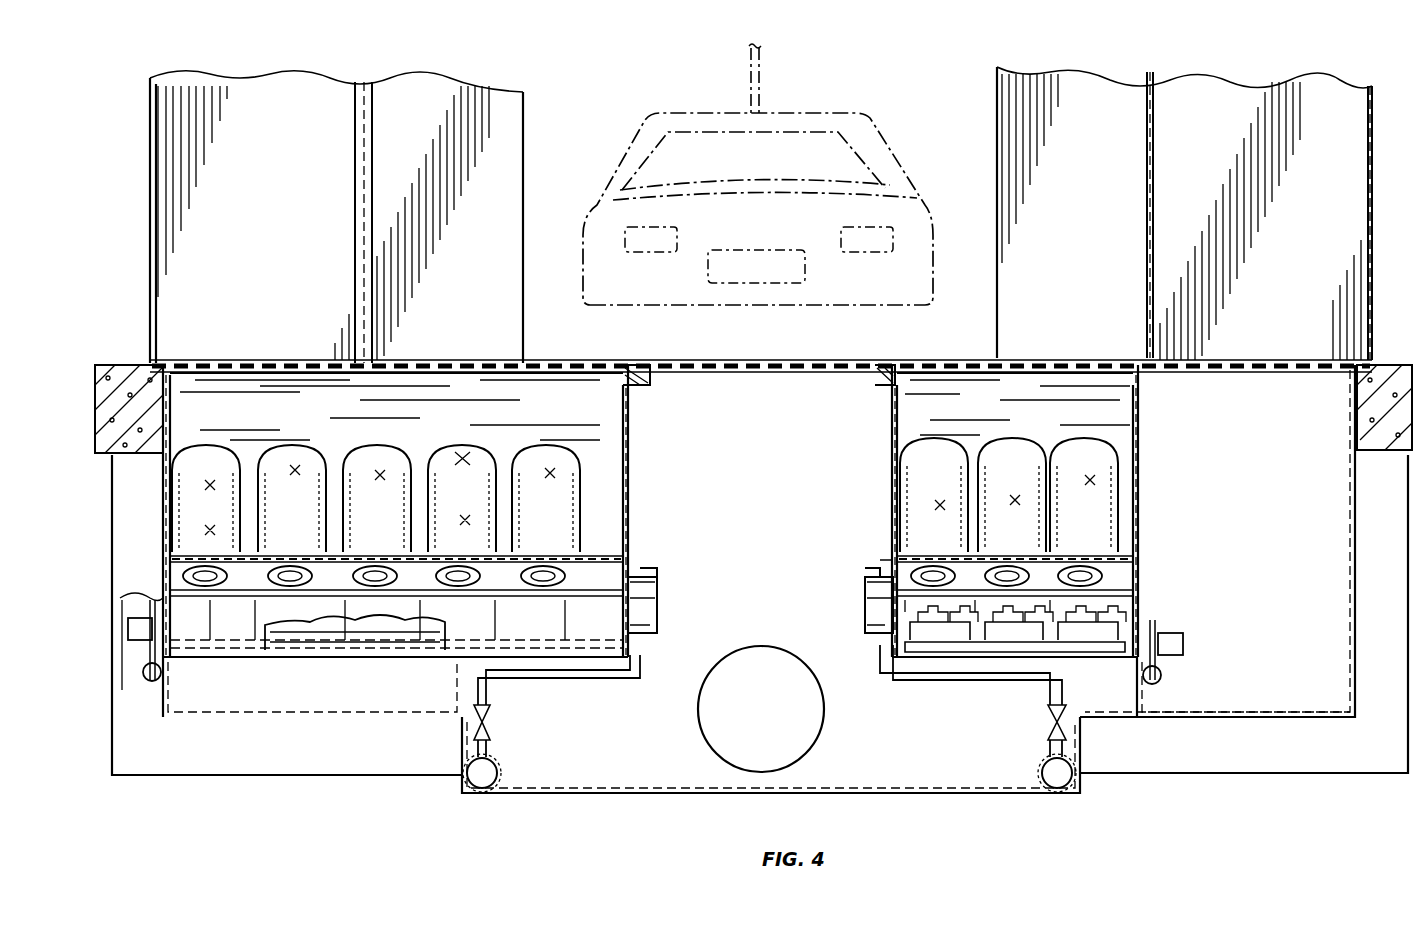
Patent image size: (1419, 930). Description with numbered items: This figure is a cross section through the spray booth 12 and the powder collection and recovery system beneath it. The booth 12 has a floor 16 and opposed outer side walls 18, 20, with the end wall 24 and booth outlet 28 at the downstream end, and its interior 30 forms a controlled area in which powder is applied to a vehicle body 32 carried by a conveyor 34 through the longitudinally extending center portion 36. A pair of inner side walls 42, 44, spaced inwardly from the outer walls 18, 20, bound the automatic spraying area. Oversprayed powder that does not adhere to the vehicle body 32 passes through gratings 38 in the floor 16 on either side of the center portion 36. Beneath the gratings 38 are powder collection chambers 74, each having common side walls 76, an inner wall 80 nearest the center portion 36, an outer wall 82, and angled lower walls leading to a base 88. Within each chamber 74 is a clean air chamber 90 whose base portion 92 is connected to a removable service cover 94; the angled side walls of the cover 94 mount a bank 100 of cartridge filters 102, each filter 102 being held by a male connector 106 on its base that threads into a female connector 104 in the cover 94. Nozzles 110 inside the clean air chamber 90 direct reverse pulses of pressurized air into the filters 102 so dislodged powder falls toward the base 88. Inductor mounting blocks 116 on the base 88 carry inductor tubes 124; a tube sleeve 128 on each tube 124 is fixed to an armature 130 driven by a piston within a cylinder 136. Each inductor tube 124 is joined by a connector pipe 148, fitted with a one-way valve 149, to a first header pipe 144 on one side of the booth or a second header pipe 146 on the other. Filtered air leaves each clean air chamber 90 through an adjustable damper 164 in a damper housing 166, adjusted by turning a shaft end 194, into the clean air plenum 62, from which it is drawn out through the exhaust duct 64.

The spray booth 12 is at (1113, 65).
The floor 16 is at (1232, 347).
The outer side wall 18 is at (1372, 92).
The outer side wall 20 is at (150, 82).
The end wall 24 is at (290, 190).
The booth outlet 28 is at (526, 112).
The interior 30 is at (1035, 181).
The vehicle body 32 is at (880, 138).
The conveyor 34 is at (765, 75).
The center portion 36 is at (782, 323).
The gratings 38 is at (275, 362).
The inner side wall 42 is at (1153, 185).
The inner side wall 44 is at (372, 160).
The clean air plenum 62 is at (777, 505).
The exhaust duct 64 is at (822, 732).
The powder collection chamber 74 is at (552, 423).
The side wall 76 is at (320, 415).
The inner wall 80 is at (630, 470).
The outer wall 82 is at (170, 480).
The base 88 is at (320, 660).
The clean air chamber 90 is at (1140, 570).
The base portion 92 is at (605, 620).
The service cover 94 is at (621, 554).
The bank of cartridge filters 100 is at (602, 468).
The cartridge filter 102 is at (462, 446).
The female connector 104 is at (892, 568).
The male connector 106 is at (938, 572).
The nozzle 110 is at (1085, 618).
The inductor mounting block 116 is at (400, 660).
The inductor tube 124 is at (420, 640).
The tube sleeve 128 is at (150, 600).
The armature 130 is at (175, 636).
The cylinder 136 is at (160, 678).
The first header pipe 144 is at (502, 773).
The second header pipe 146 is at (1038, 773).
The connector pipe 148 is at (642, 668).
The one-way valve 149 is at (495, 725).
The adjustable damper 164 is at (672, 604).
The damper housing 166 is at (660, 612).
The shaft end 194 is at (658, 574).